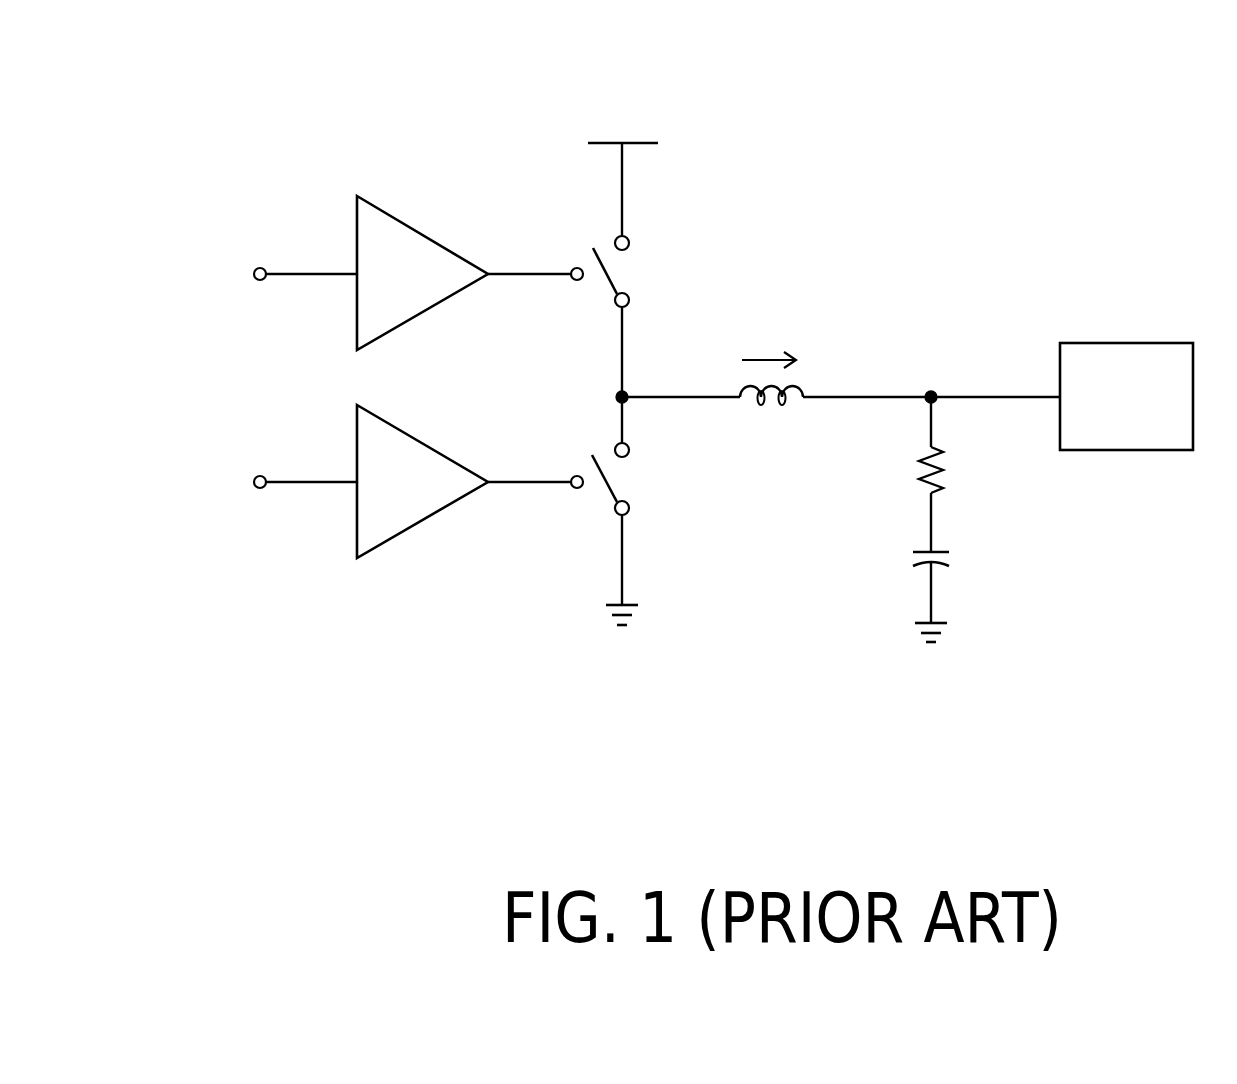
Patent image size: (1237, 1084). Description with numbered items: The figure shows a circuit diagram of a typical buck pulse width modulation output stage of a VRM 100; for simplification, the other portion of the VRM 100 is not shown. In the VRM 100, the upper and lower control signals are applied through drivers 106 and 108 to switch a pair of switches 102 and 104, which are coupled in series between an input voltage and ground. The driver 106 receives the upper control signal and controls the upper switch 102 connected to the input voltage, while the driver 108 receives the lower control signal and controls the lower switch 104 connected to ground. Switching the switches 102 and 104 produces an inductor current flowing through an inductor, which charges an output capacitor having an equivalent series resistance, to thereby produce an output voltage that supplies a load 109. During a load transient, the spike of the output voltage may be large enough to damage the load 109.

The VRM 100 is at (700, 367).
The switch 102 is at (654, 256).
The switch 104 is at (650, 487).
The driver 106 is at (422, 232).
The driver 108 is at (420, 442).
The load 109 is at (1123, 343).